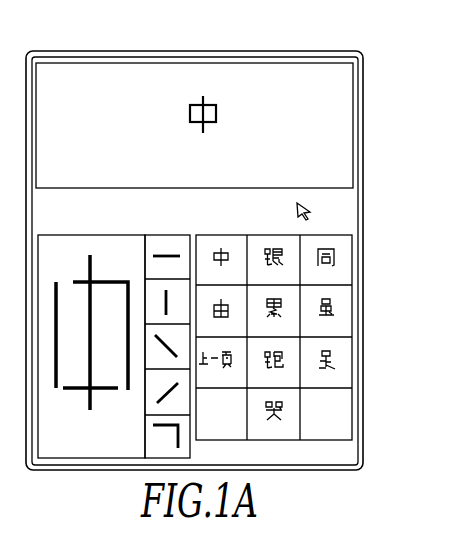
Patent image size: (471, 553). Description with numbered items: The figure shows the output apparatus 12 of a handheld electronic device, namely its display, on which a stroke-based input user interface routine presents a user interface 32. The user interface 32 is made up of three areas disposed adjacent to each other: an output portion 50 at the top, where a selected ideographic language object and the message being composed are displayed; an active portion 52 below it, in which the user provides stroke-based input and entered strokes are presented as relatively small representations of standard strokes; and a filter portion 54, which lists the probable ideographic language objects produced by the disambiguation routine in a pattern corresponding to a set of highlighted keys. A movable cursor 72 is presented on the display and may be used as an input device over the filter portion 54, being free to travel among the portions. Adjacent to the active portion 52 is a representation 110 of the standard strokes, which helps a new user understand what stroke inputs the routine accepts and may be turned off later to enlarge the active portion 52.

The output apparatus 12 is at (356, 123).
The user interface 32 is at (362, 222).
The output portion 50 is at (85, 77).
The active portion 52 is at (322, 68).
The filter portion 54 is at (215, 234).
The cursor 72 is at (312, 208).
The representation of the standard strokes 110 is at (152, 224).